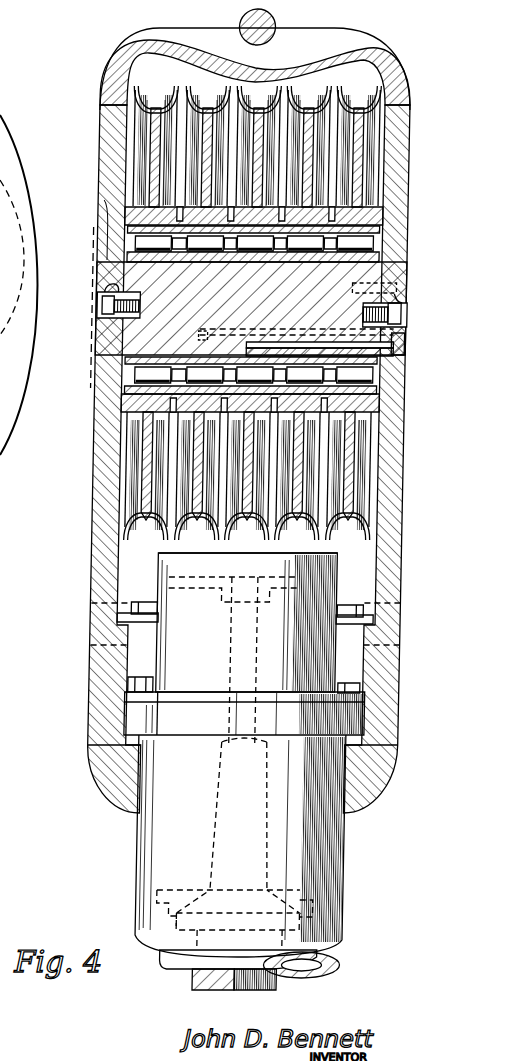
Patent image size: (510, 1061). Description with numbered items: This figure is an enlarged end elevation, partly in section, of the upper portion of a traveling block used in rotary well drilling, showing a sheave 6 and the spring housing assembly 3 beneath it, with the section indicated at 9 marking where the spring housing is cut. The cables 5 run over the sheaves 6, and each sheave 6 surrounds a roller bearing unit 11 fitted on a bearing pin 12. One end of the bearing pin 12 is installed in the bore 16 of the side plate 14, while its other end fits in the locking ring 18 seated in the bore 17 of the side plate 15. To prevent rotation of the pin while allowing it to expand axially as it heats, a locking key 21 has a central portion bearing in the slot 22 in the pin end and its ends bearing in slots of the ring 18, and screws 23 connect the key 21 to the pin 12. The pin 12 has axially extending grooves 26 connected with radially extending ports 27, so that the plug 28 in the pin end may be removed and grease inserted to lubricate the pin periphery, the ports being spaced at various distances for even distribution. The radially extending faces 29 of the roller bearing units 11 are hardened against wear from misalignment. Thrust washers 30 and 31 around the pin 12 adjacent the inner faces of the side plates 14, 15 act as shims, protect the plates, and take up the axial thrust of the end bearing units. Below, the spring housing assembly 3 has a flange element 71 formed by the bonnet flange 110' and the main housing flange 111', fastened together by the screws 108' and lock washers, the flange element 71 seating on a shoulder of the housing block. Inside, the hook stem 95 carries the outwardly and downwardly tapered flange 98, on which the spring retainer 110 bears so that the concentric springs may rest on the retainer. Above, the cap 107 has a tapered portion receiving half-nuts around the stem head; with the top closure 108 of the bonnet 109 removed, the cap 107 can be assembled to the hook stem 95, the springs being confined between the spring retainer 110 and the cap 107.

The spring housing assembly 3 is at (419, 90).
The side plate 14 is at (106, 162).
The bore 16 is at (111, 202).
The sheave 6 is at (359, 103).
The roller bearing unit 11 is at (384, 217).
The bore 17 is at (409, 213).
The locking ring 18 is at (415, 257).
The radially extending face 29 is at (285, 255).
The bearing pin 12 is at (283, 313).
The plug 28 is at (408, 340).
The axially extending groove 26 is at (243, 332).
The radially extending port 27 is at (211, 335).
The locking key 21 is at (116, 323).
The screw 23 is at (113, 307).
The slot 22 is at (120, 292).
The thrust washer 31 is at (412, 393).
The thrust washer 30 is at (130, 387).
The side plate 15 is at (413, 442).
The ring plate 9 is at (100, 618).
The bonnet 109 is at (184, 600).
The top closure 108 is at (247, 547).
The cap 107 is at (296, 580).
The flange element 71 is at (186, 697).
The bonnet flange 110' is at (245, 679).
The main housing flange 111' is at (182, 713).
The screw 108' is at (244, 662).
The hook stem 95 is at (267, 805).
The spring retainer 110 is at (234, 897).
The tapered flange 98 is at (275, 913).
The cable 5 is at (96, 227).